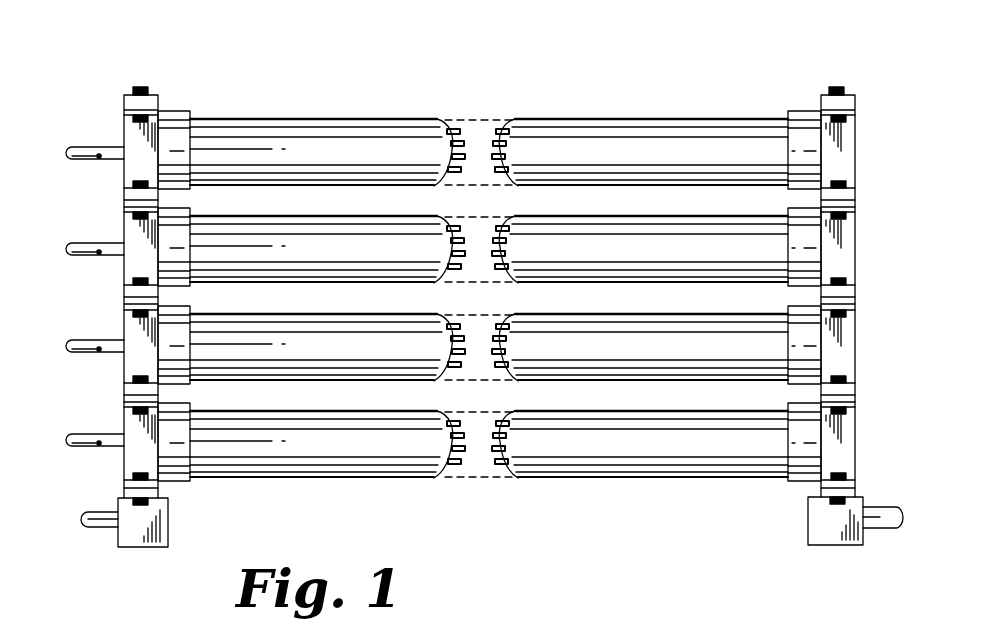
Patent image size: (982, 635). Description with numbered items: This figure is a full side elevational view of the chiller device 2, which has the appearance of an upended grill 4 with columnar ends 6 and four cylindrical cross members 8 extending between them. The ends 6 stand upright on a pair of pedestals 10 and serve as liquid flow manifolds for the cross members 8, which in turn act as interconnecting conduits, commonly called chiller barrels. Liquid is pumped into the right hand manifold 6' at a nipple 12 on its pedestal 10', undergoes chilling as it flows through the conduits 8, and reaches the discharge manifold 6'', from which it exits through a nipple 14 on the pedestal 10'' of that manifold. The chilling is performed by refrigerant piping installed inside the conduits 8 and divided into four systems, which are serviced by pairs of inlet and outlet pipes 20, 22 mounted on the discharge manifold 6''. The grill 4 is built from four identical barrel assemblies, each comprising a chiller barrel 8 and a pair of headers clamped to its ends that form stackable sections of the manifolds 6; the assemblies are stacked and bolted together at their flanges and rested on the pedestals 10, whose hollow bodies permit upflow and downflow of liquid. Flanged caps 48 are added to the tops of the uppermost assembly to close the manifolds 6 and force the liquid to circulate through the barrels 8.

The chiller device 2 is at (712, 97).
The grill 4 is at (329, 114).
The columnar ends 6 is at (487, 291).
The right hand manifold 6' is at (863, 356).
The discharge manifold 6'' is at (113, 345).
The cylindrical cross members 8 is at (585, 114).
The pedestals 10 is at (490, 561).
The pedestal 10' is at (799, 525).
The pedestal 10'' is at (150, 557).
The nipple 12 is at (882, 506).
The nipple 14 is at (102, 513).
The inlet pipes 20 is at (72, 241).
The outlet pipes 22 is at (106, 243).
The flanged caps 48 is at (128, 90).